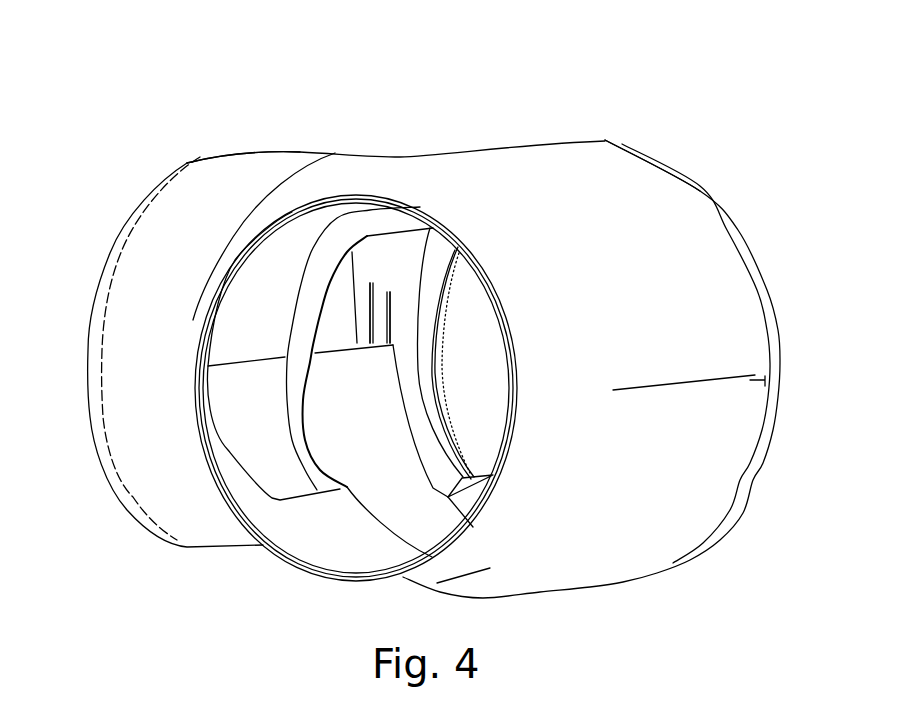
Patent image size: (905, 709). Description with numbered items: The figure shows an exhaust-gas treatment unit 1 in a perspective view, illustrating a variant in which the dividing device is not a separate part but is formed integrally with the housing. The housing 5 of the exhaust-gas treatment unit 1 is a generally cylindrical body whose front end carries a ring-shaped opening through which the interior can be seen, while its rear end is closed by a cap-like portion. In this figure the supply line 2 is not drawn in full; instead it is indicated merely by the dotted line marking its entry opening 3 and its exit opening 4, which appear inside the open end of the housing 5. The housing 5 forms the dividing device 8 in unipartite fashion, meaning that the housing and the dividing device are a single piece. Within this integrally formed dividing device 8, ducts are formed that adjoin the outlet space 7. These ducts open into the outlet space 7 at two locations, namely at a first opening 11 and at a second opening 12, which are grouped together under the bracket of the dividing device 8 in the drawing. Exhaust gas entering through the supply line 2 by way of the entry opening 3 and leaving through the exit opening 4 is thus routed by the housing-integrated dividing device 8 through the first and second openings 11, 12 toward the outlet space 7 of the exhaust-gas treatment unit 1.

The exhaust-gas treatment unit 1 is at (662, 95).
The supply line 2 is at (435, 365).
The entry opening 3 is at (301, 572).
The exit opening 4 is at (463, 450).
The housing 5 is at (582, 170).
The outlet space 7 is at (137, 210).
The dividing device 8 is at (450, 95).
The first opening 11 is at (388, 278).
The second opening 12 is at (274, 424).